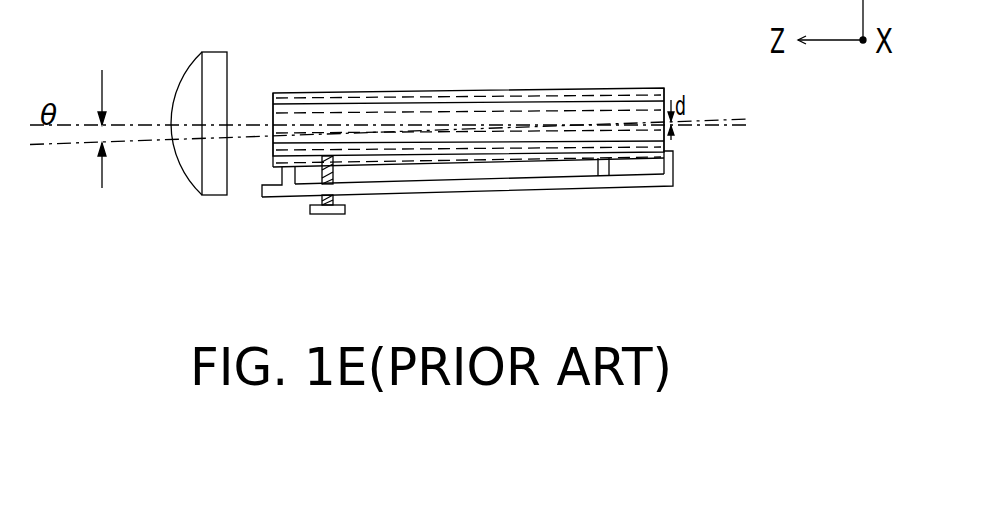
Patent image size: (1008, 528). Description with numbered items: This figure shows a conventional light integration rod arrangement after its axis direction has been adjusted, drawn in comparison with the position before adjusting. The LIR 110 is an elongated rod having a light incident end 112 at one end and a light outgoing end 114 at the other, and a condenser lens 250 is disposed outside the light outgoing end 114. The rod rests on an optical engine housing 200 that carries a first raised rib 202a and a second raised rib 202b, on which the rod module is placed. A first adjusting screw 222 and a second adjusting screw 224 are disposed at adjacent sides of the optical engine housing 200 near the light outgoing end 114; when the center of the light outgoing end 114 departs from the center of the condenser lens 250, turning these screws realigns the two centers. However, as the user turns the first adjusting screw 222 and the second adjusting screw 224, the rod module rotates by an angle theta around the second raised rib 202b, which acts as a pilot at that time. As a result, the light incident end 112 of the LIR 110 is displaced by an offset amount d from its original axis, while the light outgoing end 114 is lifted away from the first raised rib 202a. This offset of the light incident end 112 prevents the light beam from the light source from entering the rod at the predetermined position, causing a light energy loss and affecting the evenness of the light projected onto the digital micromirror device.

The LIR 110 is at (345, 92).
The light incident end 112 is at (672, 88).
The light outgoing end 114 is at (261, 96).
The optical engine housing 200 is at (465, 224).
The first raised rib 202a is at (283, 194).
The second raised rib 202b is at (607, 168).
The first adjusting screw 222 is at (355, 227).
The second adjusting screw 224 is at (328, 215).
The condenser lens 250 is at (170, 165).